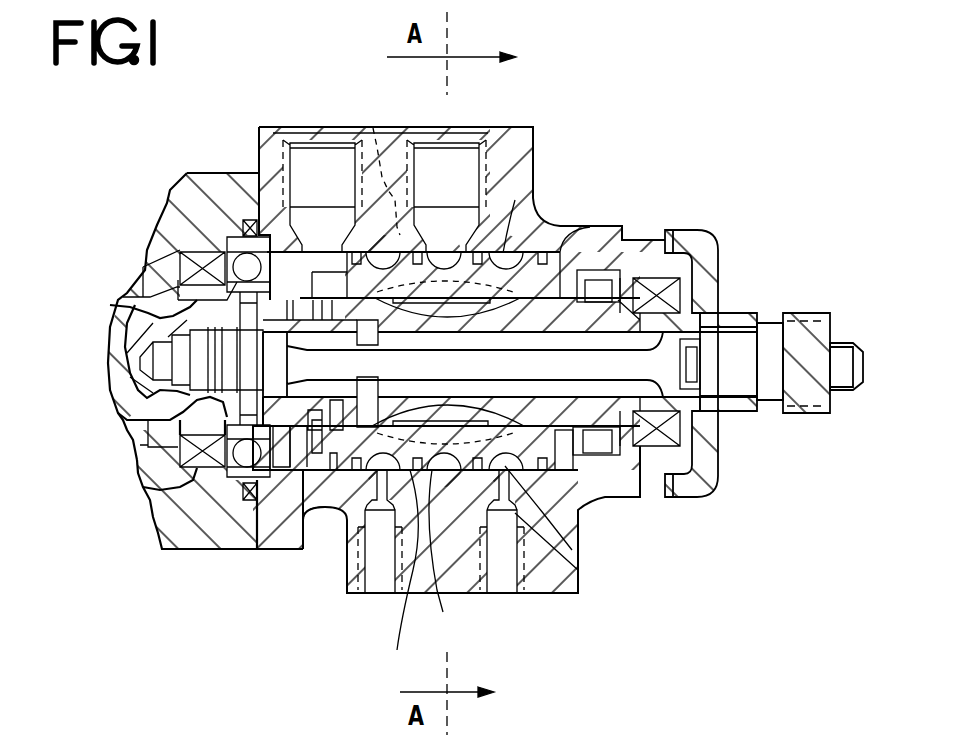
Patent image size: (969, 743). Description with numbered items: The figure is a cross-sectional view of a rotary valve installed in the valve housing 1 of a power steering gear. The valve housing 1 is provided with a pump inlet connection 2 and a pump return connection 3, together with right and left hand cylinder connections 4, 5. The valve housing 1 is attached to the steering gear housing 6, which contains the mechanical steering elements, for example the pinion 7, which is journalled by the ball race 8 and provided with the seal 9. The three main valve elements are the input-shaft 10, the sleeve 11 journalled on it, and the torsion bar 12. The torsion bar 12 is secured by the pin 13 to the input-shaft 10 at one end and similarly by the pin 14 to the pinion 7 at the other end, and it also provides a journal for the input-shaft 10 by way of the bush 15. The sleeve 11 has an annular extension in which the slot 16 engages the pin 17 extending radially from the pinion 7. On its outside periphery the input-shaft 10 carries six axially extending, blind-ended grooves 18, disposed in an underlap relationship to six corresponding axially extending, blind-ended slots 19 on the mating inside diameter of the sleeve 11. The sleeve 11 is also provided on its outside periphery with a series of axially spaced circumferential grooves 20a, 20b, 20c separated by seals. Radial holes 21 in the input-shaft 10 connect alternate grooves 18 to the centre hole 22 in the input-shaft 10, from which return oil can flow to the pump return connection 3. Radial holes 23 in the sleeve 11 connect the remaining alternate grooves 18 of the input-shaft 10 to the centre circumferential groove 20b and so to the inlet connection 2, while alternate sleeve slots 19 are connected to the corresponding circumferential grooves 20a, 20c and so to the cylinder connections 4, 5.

The valve housing 1 is at (570, 227).
The pump inlet connection 2 is at (467, 160).
The pump return connection 3 is at (308, 155).
The right hand cylinder connection 4 is at (370, 583).
The left hand cylinder connection 5 is at (508, 583).
The steering gear housing 6 is at (167, 530).
The pinion 7 is at (115, 413).
The ball race 8 is at (247, 458).
The seal 9 is at (143, 487).
The input-shaft 10 is at (647, 465).
The sleeve 11 is at (550, 457).
The torsion bar 12 is at (683, 310).
The pin 13 is at (777, 395).
The pin 14 is at (112, 305).
The bush 15 is at (283, 426).
The slot 16 is at (317, 517).
The pin 17 is at (303, 470).
The grooves 18 is at (612, 232).
The slots 19 is at (373, 128).
The circumferential groove 20a is at (400, 574).
The centre circumferential groove 20b is at (453, 558).
The circumferential groove 20c is at (572, 550).
The radial holes 21 is at (480, 388).
The centre hole 22 is at (690, 435).
The radial holes 23 is at (515, 200).